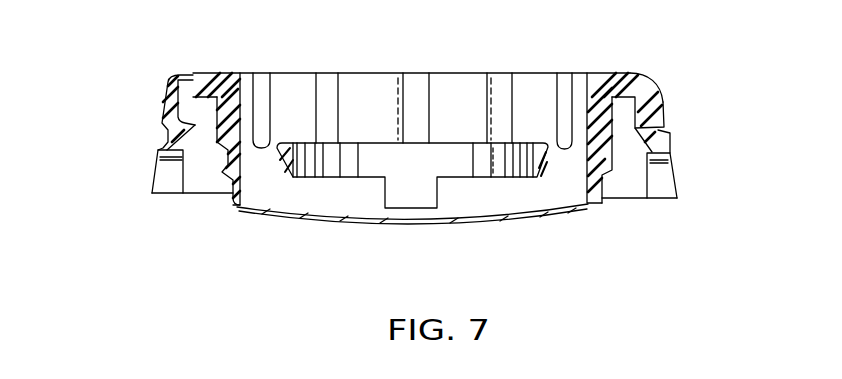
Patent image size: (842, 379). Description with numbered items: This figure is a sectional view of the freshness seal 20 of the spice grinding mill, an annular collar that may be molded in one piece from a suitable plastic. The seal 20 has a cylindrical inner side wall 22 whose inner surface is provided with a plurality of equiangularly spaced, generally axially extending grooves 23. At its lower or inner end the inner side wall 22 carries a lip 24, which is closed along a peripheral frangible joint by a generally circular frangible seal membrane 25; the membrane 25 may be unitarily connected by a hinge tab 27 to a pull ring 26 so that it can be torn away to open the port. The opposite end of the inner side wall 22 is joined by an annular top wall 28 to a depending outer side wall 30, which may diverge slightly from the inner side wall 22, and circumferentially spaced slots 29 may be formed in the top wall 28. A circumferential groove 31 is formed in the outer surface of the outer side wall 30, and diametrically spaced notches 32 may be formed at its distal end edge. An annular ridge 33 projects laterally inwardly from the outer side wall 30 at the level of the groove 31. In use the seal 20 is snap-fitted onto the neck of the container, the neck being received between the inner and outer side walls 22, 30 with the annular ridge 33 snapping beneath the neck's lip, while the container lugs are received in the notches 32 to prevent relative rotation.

The freshness seal 20 is at (118, 136).
The cylindrical inner side wall 22 is at (365, 90).
The grooves 23 is at (503, 87).
The lip 24 is at (235, 204).
The frangible seal membrane 25 is at (336, 221).
The pull ring 26 is at (532, 140).
The hinge tab 27 is at (402, 195).
The annular top wall 28 is at (615, 78).
The slots 29 is at (186, 88).
The outer side wall 30 is at (667, 120).
The circumferential groove 31 is at (658, 141).
The notches 32 is at (165, 183).
The annular ridge 33 is at (635, 130).